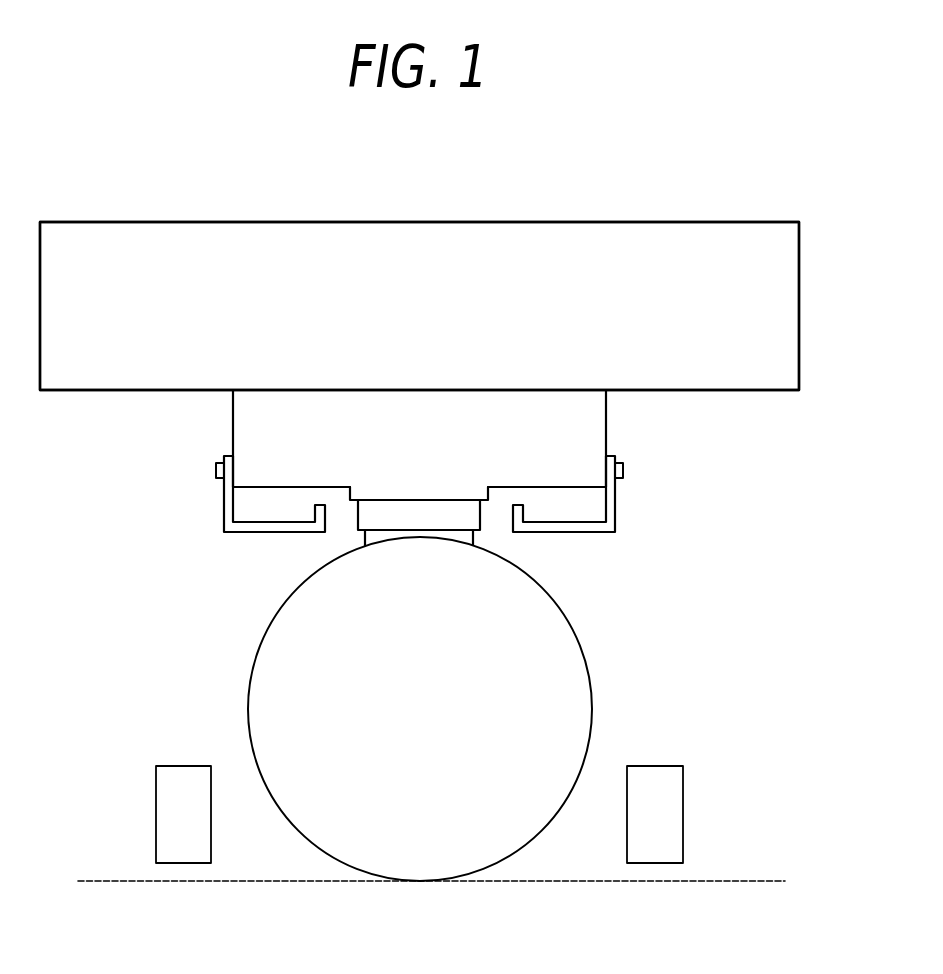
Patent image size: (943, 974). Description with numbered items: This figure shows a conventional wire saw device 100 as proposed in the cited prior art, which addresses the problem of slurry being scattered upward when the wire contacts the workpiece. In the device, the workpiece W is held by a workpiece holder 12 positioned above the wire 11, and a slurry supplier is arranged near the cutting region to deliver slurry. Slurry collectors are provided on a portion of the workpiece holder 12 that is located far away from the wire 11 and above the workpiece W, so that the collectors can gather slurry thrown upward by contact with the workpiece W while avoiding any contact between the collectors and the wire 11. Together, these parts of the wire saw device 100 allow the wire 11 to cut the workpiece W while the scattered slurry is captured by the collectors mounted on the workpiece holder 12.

The wire saw device 100 is at (537, 178).
The workpiece holder 12 is at (415, 237).
The workpiece W is at (553, 665).
The wire 11 is at (714, 881).